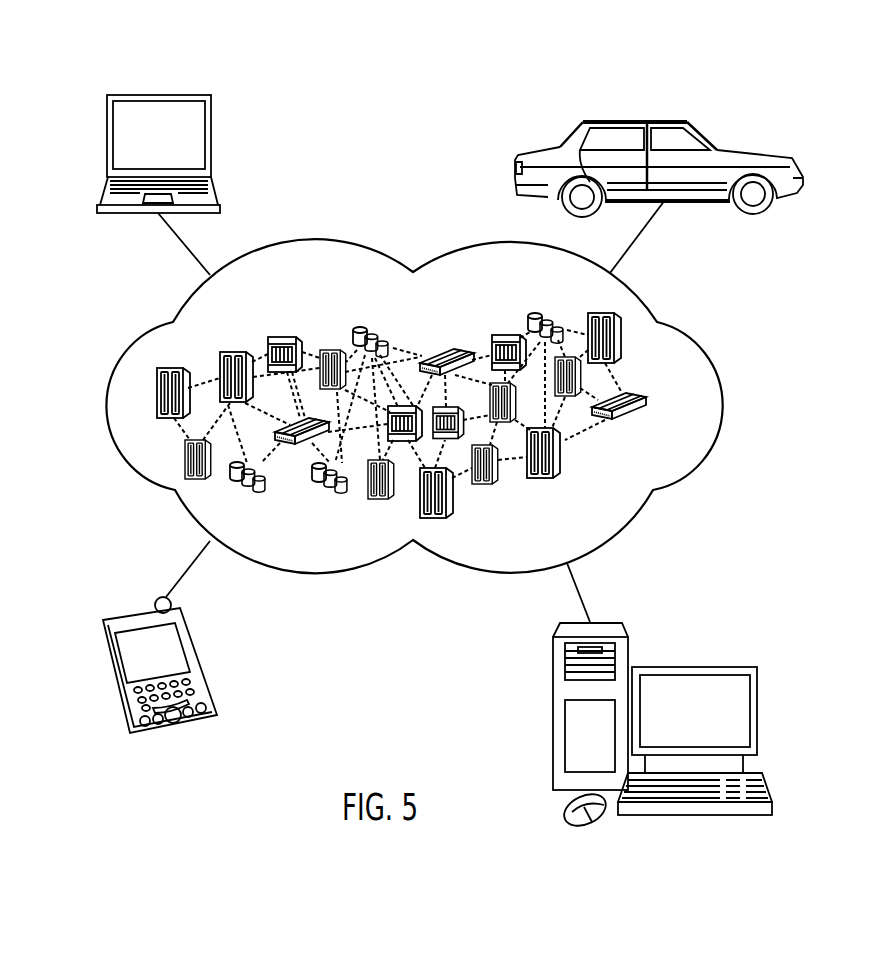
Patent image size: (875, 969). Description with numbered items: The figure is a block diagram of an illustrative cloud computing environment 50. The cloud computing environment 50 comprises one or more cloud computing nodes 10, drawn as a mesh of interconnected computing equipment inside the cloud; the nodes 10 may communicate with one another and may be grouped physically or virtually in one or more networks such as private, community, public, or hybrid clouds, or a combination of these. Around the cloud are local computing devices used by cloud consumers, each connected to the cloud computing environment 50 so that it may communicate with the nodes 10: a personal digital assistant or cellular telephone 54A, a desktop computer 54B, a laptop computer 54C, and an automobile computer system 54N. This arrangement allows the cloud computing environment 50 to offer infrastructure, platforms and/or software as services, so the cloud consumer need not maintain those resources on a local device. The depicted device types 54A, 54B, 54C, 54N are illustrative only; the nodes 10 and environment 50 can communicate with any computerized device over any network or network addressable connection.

The cloud computing node 10 is at (655, 409).
The cloud computing environment 50 is at (704, 326).
The personal digital assistant or cellular telephone 54A is at (141, 610).
The desktop computer 54B is at (694, 665).
The laptop computer 54C is at (158, 93).
The automobile computer system 54N is at (641, 119).